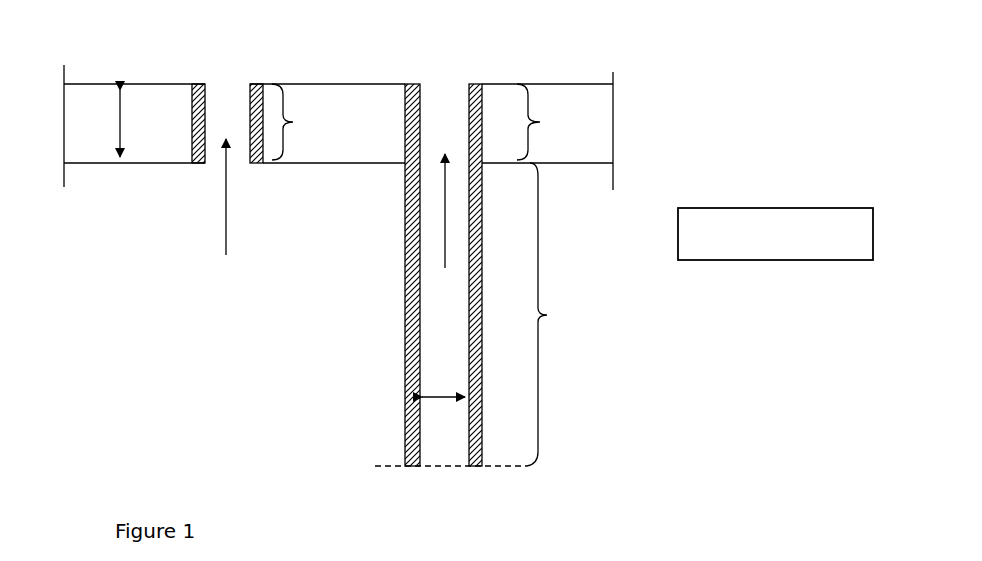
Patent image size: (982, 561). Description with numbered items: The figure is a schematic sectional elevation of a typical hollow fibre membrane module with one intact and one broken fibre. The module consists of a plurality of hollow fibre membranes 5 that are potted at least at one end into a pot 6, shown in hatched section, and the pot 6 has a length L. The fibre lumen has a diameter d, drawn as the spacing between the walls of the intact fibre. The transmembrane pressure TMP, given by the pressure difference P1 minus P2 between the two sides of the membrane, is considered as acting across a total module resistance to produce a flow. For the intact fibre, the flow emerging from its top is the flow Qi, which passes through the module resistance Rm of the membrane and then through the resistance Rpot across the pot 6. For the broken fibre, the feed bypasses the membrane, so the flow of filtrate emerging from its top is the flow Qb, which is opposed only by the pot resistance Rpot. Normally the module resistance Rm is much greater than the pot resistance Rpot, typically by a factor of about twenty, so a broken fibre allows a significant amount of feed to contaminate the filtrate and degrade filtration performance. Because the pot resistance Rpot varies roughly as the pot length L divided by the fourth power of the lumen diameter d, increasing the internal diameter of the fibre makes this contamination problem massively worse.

The hollow fibre membranes 5 is at (207, 101).
The pot 6 is at (368, 117).
The length of the pot L is at (130, 123).
The diameter of the lumen d is at (443, 413).
The flow of filtrate emerging from the top of the broken fibre Qb is at (224, 221).
The flow emerging from the top of the intact fibre Qi is at (441, 233).
The resistance across the pot Rpot is at (433, 122).
The module resistance Rm is at (563, 314).
The feed-side pressure P1 is at (332, 220).
The filtrate-side pressure P2 is at (335, 39).
The transmembrane pressure TMP is at (775, 234).